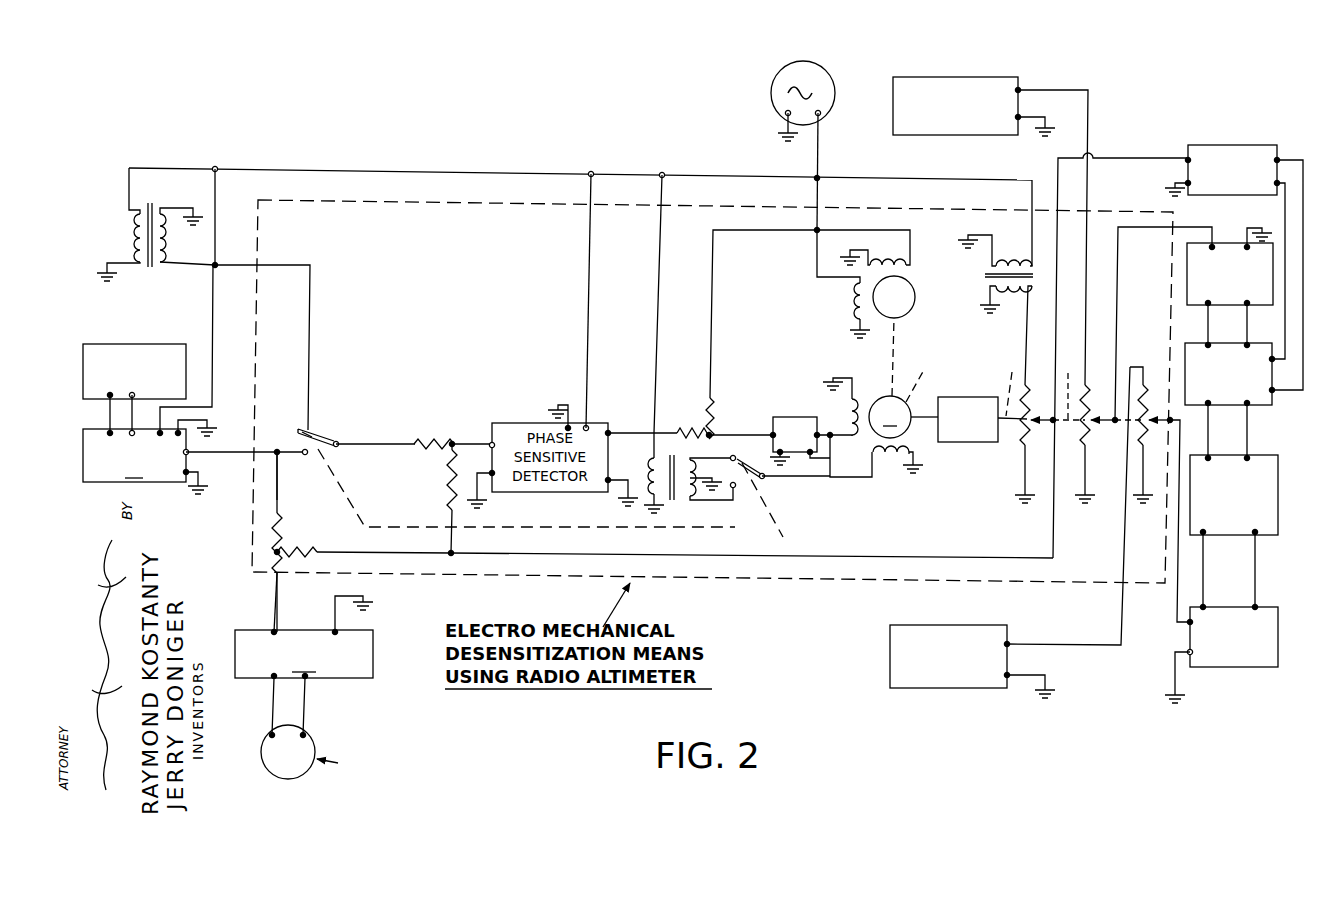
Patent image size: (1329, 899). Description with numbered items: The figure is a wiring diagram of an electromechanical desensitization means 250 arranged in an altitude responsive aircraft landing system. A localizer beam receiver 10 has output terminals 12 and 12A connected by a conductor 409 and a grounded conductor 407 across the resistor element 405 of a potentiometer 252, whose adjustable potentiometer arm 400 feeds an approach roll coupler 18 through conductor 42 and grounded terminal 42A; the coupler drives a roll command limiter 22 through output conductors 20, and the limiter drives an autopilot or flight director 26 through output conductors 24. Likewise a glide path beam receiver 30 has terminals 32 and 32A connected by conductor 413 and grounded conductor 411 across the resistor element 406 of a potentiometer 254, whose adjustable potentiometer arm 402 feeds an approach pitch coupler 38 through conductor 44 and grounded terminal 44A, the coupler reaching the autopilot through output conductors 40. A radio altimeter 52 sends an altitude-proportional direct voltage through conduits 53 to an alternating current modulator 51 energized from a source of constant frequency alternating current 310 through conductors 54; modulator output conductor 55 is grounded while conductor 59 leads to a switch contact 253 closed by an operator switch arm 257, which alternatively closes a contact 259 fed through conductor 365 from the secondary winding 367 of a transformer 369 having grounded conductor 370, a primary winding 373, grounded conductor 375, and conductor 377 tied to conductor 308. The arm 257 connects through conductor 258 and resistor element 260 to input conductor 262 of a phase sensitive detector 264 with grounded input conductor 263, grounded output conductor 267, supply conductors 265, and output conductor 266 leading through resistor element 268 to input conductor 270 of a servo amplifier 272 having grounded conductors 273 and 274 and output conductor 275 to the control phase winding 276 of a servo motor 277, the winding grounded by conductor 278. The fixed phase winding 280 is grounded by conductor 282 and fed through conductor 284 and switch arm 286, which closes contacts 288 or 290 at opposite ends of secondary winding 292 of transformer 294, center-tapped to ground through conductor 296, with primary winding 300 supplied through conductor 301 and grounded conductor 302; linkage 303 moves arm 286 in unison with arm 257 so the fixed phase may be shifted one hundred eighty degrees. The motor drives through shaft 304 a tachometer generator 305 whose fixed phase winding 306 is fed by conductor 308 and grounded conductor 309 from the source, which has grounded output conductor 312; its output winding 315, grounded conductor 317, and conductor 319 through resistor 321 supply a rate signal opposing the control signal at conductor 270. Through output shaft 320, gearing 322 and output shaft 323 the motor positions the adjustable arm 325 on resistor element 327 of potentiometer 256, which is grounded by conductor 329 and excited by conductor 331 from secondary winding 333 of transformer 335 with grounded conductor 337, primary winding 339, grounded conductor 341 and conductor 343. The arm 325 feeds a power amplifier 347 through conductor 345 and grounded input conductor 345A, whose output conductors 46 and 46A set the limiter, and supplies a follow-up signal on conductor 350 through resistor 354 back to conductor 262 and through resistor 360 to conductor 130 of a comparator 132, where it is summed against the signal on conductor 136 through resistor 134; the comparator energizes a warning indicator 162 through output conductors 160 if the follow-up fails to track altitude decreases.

The localizer beam receiver 10 is at (898, 78).
The output terminal of localizer receiver 12 is at (1022, 88).
The grounded output terminal of localizer receiver 12A is at (1040, 124).
The approach roll coupler 18 is at (1204, 308).
The output conductors of approach roll coupler 20 is at (1247, 334).
The roll command limiter 22 is at (1252, 410).
The output conductors of roll command limiter 24 is at (1247, 440).
The autopilot or flight director 26 is at (1262, 542).
The glide path beam receiver 30 is at (893, 688).
The output terminal of glide path beam receiver 32 is at (1030, 644).
The grounded output terminal of glide path beam receiver 32A is at (1032, 675).
The approach pitch coupler 38 is at (1230, 668).
The output conductors of approach pitch coupler 40 is at (1255, 590).
The conductor to approach roll coupler 42 is at (1118, 263).
The grounded input terminal of approach roll coupler 42A is at (1250, 234).
The conductor to approach pitch coupler 44 is at (1177, 598).
The grounded input terminal of approach pitch coupler 44A is at (1172, 660).
The output conductor of power amplifier 46 is at (1302, 155).
The output conductor of power amplifier 46A is at (1268, 221).
The alternating current modulator 51 is at (136, 455).
The radio altimeter 52 is at (120, 344).
The conduits from radio altimeter 53 is at (132, 410).
The conductors to modulator 54 is at (212, 420).
The modulator output conductor 55 is at (186, 480).
The modulator output conductor 59 is at (236, 455).
The comparator input conductor 130 is at (277, 608).
The comparator 132 is at (304, 637).
The resistor 134 is at (283, 533).
The conductor 136 is at (283, 498).
The comparator output conductors 160 is at (305, 690).
The warning indicator 162 is at (273, 775).
The electromechanical desensitization means 250 is at (250, 556).
The potentiometer 252 is at (1090, 446).
The switch contact 253 is at (307, 465).
The potentiometer 254 is at (1151, 428).
The potentiometer 256 is at (1041, 459).
The switch arm 257 is at (322, 438).
The conductor 258 is at (408, 428).
The switch contact 259 is at (312, 428).
The resistor element 260 is at (432, 440).
The input conductor 262 is at (472, 444).
The input conductor 263 is at (488, 505).
The phase sensitive detector 264 is at (536, 420).
The conductors 265 is at (570, 405).
The output conductor 266 is at (590, 418).
The grounded output conductor 267 is at (623, 498).
The resistor element 268 is at (693, 430).
The input conductor 270 is at (728, 433).
The servo amplifier 272 is at (794, 414).
The grounded input conductor 273 is at (790, 466).
The grounded output conductor 274 is at (813, 460).
The output conductor 275 is at (876, 451).
The control phase winding 276 is at (851, 418).
The servo motor 277 is at (878, 395).
The grounded conductor 278 is at (832, 378).
The fixed phase winding 280 is at (892, 458).
The common ground conductor 282 is at (917, 462).
The conductor 284 is at (826, 480).
The switch arm 286 is at (758, 475).
The switch contact 288 is at (735, 446).
The switch contact 290 is at (737, 490).
The secondary winding 292 is at (694, 444).
The transformer 294 is at (673, 502).
The conductor 296 is at (711, 479).
The primary winding 300 is at (657, 478).
The conductor 301 is at (650, 330).
The grounded conductor 302 is at (650, 504).
The linkage 303 is at (486, 536).
The shaft 304 is at (899, 362).
The rate or tachometer generator 305 is at (916, 303).
The fixed phase winding 306 is at (853, 294).
The conductor 308 is at (822, 145).
The grounded conductor 309 is at (855, 328).
The source of constant frequency alternating current 310 is at (772, 78).
The grounded output conductor 312 is at (778, 122).
The output winding 315 is at (863, 247).
The grounded output conductor 317 is at (841, 248).
The conductor 319 is at (713, 328).
The output shaft 320 is at (914, 382).
The resistor 321 is at (714, 412).
The gearing 322 is at (982, 402).
The output shaft 323 is at (1097, 430).
The adjustable arm 325 is at (1043, 415).
The resistor element 327 is at (1028, 425).
The grounded conductor 329 is at (1022, 487).
The conductor 331 is at (975, 282).
The secondary winding 333 is at (1012, 297).
The transformer 335 is at (983, 277).
The grounded conductor 337 is at (988, 297).
The primary winding 339 is at (1012, 258).
The grounded conductor 341 is at (963, 232).
The conductor 343 is at (912, 178).
The conductor 345 is at (1172, 160).
The input conductor 345A is at (1172, 185).
The power amplifier 347 is at (1222, 143).
The conductor 350 is at (1052, 532).
The resistor 354 is at (448, 470).
The resistor 360 is at (300, 548).
The conductor 365 is at (310, 338).
The secondary winding 367 is at (168, 252).
The transformer 369 is at (145, 236).
The grounded conductor 370 is at (175, 212).
The primary winding 373 is at (126, 225).
The grounded conductor 375 is at (123, 263).
The conductor 377 is at (400, 170).
The adjustable potentiometer arm 400 is at (1103, 415).
The adjustable potentiometer arm 402 is at (1152, 418).
The resistor element 405 is at (1080, 433).
The resistor element 406 is at (1153, 350).
The grounded conductor 407 is at (1076, 487).
The conductor 409 is at (1090, 305).
The grounded conductor 411 is at (1151, 491).
The conductor 413 is at (1121, 618).